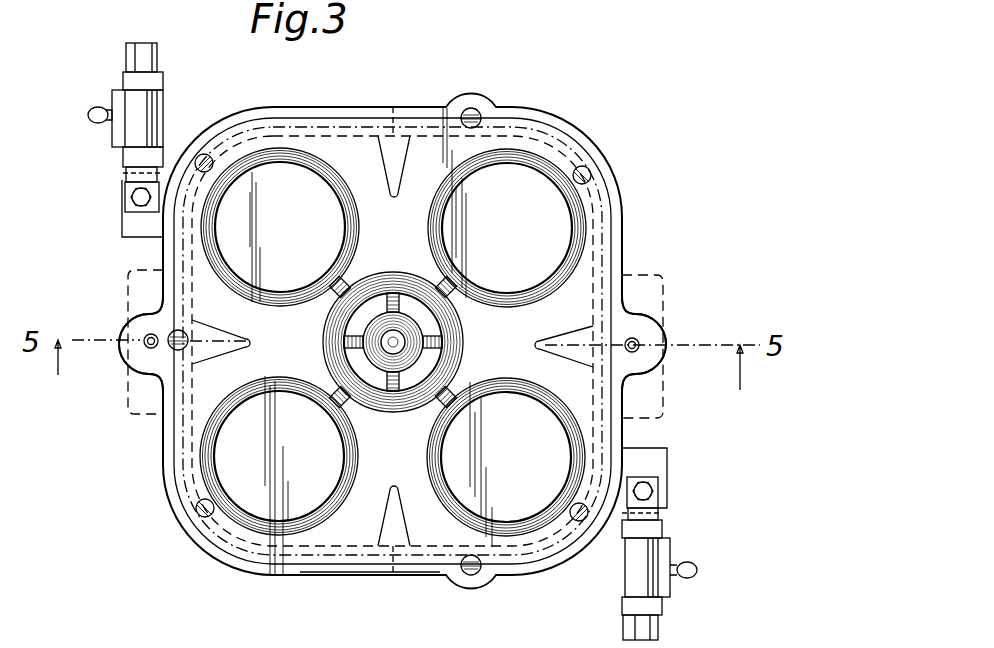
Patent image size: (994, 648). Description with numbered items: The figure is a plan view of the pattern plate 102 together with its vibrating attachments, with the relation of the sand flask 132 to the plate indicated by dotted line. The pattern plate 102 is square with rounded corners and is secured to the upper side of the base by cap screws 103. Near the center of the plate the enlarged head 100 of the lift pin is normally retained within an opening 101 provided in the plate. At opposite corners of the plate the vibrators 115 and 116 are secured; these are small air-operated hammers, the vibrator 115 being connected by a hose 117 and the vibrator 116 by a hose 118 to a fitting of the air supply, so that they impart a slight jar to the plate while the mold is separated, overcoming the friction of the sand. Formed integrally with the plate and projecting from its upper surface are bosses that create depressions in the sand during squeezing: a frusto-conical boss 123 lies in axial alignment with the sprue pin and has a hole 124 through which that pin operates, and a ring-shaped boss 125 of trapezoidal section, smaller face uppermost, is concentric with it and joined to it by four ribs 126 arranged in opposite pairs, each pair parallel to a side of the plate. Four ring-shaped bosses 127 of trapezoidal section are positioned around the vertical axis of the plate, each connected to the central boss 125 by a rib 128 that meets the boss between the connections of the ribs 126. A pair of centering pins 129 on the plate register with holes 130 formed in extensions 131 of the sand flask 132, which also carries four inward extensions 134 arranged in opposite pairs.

The head 100 is at (473, 112).
The opening 101 is at (455, 578).
The pattern plate 102 is at (200, 402).
The cap screws 103 is at (203, 156).
The vibrator 115 is at (638, 576).
The vibrator 116 is at (150, 120).
The hose 117 is at (698, 572).
The hose 118 is at (90, 110).
The frusto-conical boss 123 is at (405, 325).
The hole 124 is at (366, 358).
The ring-shaped boss 125 is at (391, 350).
The ribs 126 is at (348, 283).
The ring-shaped bosses 127 is at (430, 236).
The rib 128 is at (334, 390).
The centering pins 129 is at (146, 333).
The holes 130 is at (145, 348).
The extensions 131 is at (146, 362).
The sand flask 132 is at (626, 252).
The inward extensions 134 is at (250, 343).